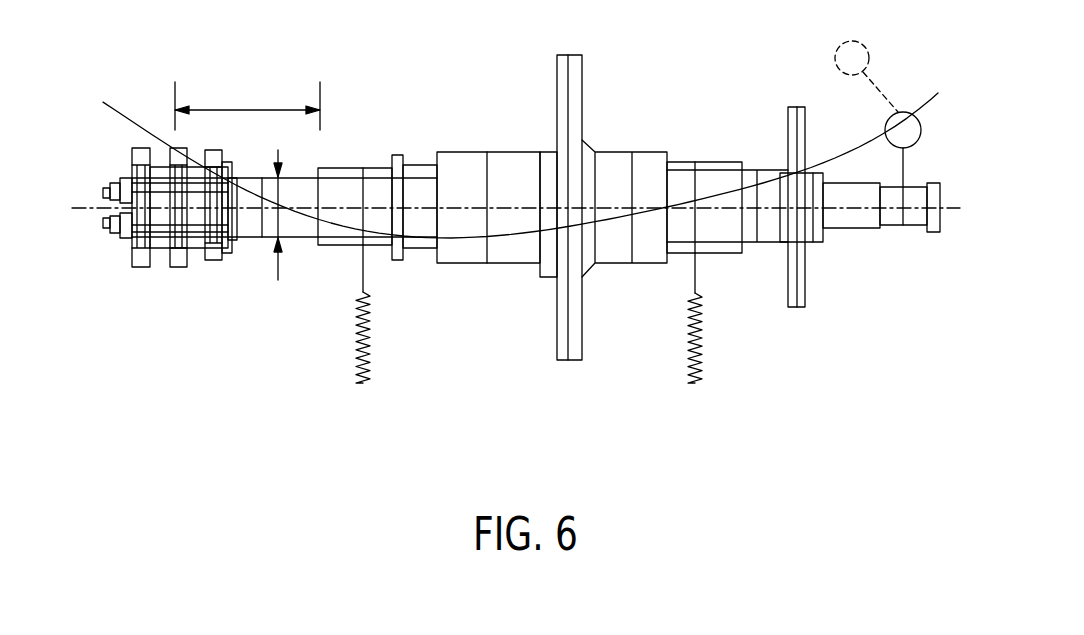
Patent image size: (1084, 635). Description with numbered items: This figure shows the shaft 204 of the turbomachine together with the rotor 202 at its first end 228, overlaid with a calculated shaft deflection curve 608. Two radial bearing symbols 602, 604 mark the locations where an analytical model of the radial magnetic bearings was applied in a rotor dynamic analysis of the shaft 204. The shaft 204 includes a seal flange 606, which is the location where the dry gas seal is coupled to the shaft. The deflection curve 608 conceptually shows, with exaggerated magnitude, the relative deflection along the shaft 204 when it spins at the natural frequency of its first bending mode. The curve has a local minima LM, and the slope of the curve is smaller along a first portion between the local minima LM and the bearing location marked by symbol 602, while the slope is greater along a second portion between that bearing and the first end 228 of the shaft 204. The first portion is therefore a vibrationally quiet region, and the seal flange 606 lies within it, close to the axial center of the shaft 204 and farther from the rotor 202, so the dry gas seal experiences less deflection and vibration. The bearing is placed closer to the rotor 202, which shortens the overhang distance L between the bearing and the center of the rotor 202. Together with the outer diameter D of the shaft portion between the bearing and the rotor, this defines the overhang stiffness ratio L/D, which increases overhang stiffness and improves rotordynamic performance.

The rotor 202 is at (150, 102).
The shaft 204 is at (606, 163).
The first end of shaft 228 is at (105, 218).
The radial bearing symbol 602 is at (365, 383).
The radial bearing symbol 604 is at (692, 383).
The seal flange 606 is at (397, 153).
The deflection curve 608 is at (929, 101).
The overhang distance L is at (268, 110).
The outer diameter D is at (277, 153).
The local minima LM is at (435, 243).